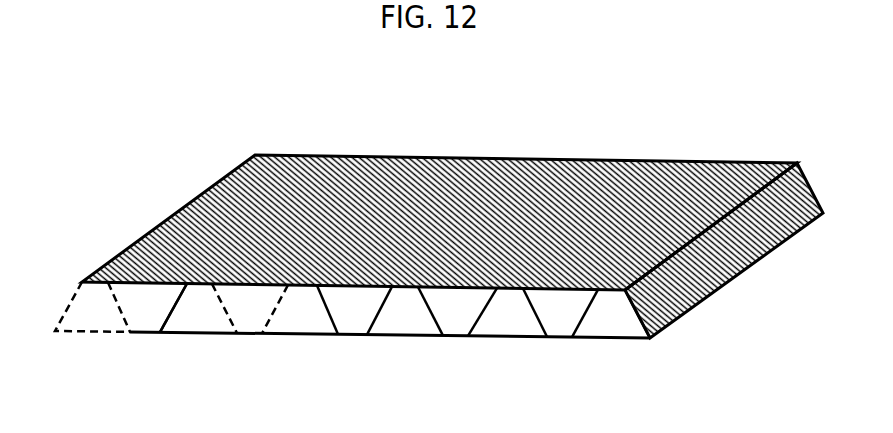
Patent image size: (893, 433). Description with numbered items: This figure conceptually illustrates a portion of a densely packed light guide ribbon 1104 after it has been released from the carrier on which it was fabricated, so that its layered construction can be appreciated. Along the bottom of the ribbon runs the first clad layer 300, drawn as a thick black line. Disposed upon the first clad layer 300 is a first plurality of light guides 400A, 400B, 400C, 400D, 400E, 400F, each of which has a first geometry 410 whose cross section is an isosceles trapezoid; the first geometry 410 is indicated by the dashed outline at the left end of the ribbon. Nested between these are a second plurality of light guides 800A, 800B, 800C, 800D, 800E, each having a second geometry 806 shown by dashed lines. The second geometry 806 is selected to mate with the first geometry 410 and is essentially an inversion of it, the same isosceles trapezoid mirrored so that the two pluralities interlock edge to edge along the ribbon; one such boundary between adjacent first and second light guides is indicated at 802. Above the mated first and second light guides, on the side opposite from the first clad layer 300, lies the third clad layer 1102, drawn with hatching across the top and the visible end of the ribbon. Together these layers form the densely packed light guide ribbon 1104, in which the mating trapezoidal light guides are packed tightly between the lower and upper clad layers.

The densely packed light guide ribbon 1104 is at (279, 125).
The third clad layer 1102 is at (592, 177).
The first clad layer 300 is at (512, 338).
The first geometry 410 is at (93, 335).
The second geometry 806 is at (250, 336).
The solid boundary line 802 is at (327, 338).
The first light guide of the first plurality 400A is at (112, 328).
The second light guide of the first plurality 400B is at (220, 329).
The third light guide of the first plurality 400C is at (322, 329).
The fourth light guide of the first plurality 400D is at (425, 331).
The fifth light guide of the first plurality 400E is at (531, 331).
The sixth light guide of the first plurality 400F is at (633, 333).
The first light guide of the second plurality 800A is at (164, 305).
The second light guide of the second plurality 800B is at (270, 305).
The third light guide of the second plurality 800C is at (372, 310).
The fourth light guide of the second plurality 800D is at (475, 310).
The fifth light guide of the second plurality 800E is at (583, 310).